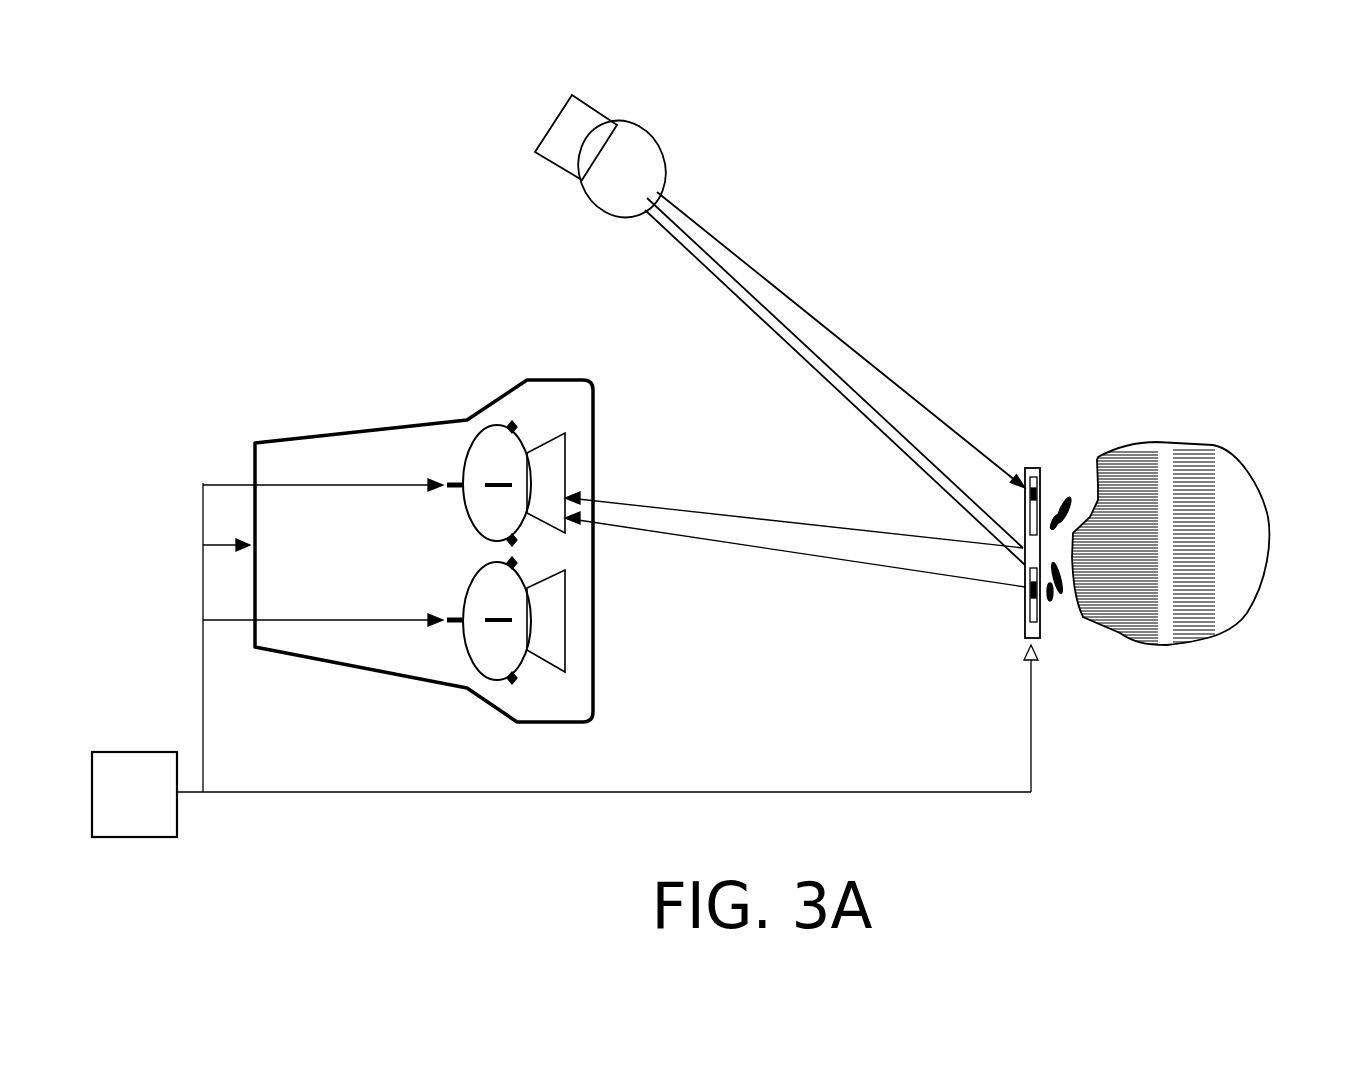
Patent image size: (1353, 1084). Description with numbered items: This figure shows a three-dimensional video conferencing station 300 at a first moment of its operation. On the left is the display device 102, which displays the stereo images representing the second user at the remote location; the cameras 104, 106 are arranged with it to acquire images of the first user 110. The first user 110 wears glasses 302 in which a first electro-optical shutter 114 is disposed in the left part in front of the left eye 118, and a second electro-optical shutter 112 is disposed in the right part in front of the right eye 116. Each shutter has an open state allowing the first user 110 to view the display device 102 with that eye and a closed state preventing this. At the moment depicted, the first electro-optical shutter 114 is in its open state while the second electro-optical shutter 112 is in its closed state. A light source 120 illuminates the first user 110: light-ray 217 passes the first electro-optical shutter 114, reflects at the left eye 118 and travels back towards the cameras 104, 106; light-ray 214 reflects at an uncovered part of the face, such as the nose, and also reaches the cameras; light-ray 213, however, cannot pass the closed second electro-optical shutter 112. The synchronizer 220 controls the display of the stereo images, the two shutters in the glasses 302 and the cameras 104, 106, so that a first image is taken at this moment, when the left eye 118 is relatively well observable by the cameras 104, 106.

The display device 102 is at (362, 445).
The camera 104 is at (502, 443).
The camera 106 is at (487, 650).
The first user 110 is at (1230, 452).
The second electro-optical shutter 112 is at (1033, 468).
The first electro-optical shutter 114 is at (1031, 608).
The right eye 116 is at (1068, 492).
The left eye 118 is at (1062, 590).
The light source 120 is at (640, 137).
The light-ray 213 is at (897, 385).
The light-ray 214 is at (860, 400).
The light-ray 217 is at (870, 425).
The synchronizer 220 is at (132, 753).
The 3D video conferencing station 300 is at (981, 302).
The glasses 302 is at (1022, 597).